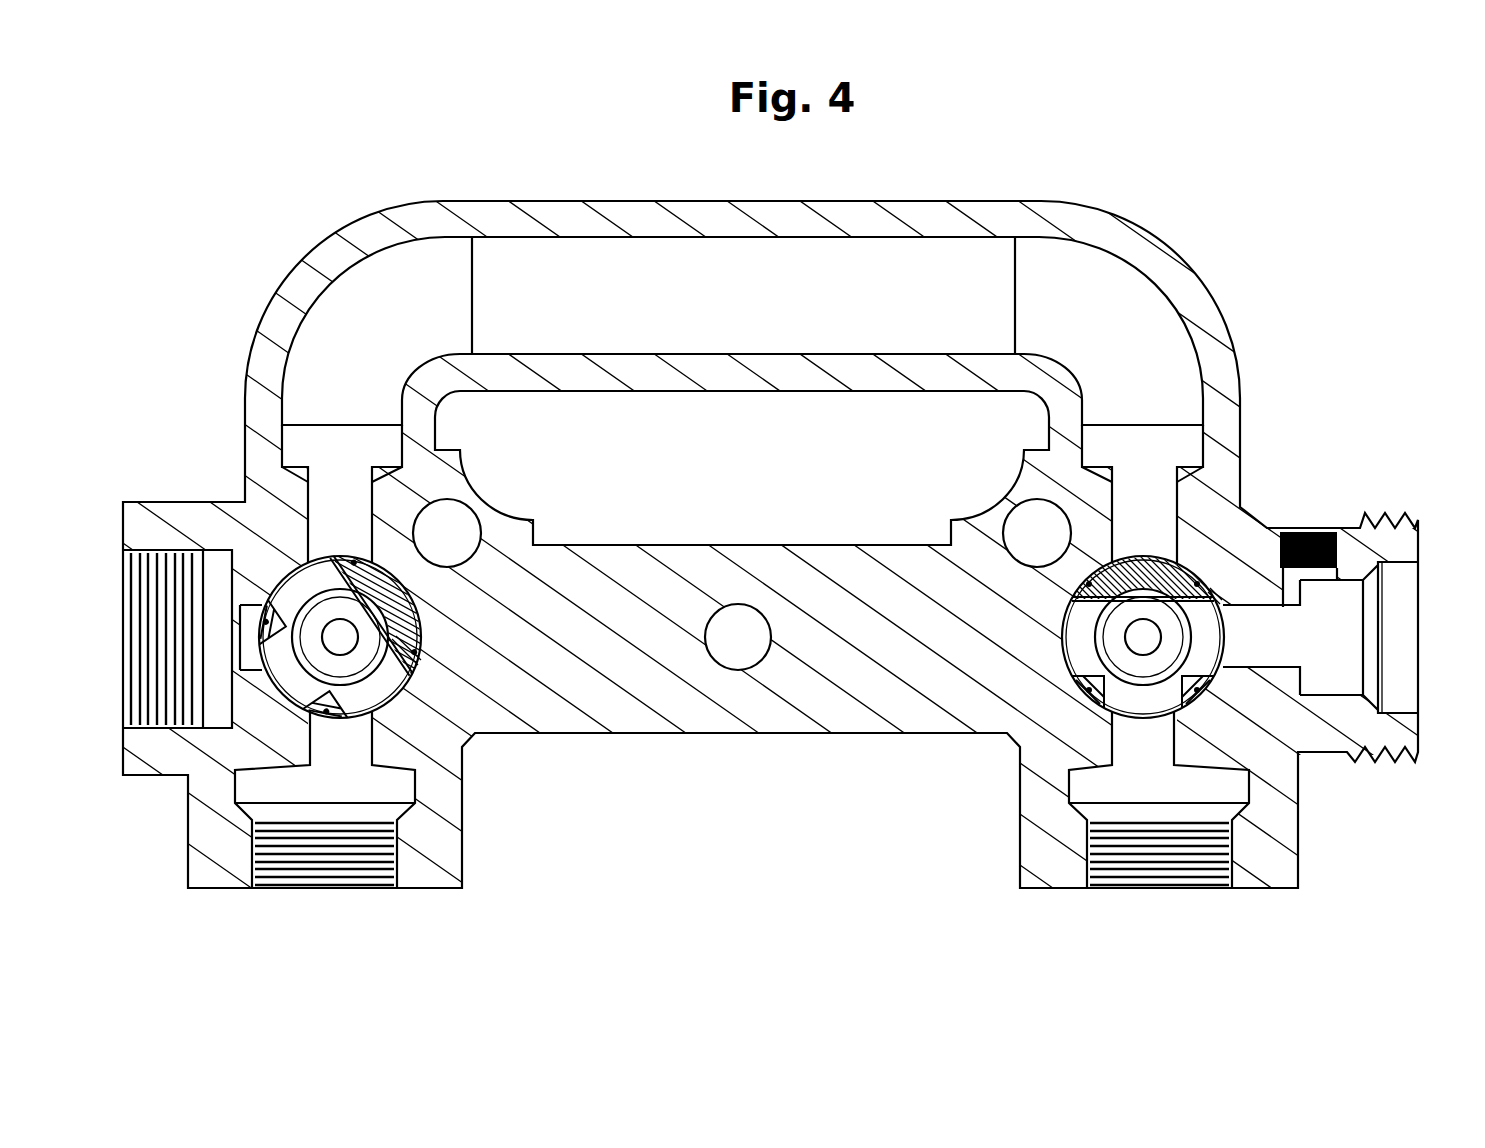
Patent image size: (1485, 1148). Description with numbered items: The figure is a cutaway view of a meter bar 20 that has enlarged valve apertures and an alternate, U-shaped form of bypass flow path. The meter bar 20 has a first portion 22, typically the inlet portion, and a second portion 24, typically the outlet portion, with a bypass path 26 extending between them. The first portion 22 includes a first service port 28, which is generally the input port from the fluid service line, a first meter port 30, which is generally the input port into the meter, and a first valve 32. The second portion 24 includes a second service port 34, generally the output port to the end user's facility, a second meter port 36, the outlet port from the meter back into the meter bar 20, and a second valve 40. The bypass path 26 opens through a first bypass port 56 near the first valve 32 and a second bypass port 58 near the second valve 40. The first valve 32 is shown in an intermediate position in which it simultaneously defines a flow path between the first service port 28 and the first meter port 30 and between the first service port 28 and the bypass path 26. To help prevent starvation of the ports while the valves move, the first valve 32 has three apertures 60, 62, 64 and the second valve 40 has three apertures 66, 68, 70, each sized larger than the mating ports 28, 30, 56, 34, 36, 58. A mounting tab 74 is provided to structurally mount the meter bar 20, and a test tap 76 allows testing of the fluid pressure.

The meter bar 20 is at (284, 252).
The first portion 22 is at (251, 350).
The second portion 24 is at (1264, 380).
The bypass path 26 is at (525, 280).
The first service port 28 is at (232, 555).
The first meter port 30 is at (332, 760).
The first valve 32 is at (445, 646).
The second service port 34 is at (1298, 632).
The second meter port 36 is at (1138, 770).
The second valve 40 is at (1300, 748).
The first bypass port 56 is at (288, 478).
The second bypass port 58 is at (1240, 470).
The aperture 60 is at (268, 592).
The aperture 62 is at (290, 690).
The aperture 64 is at (393, 693).
The aperture 66 is at (1218, 604).
The aperture 68 is at (1117, 703).
The aperture 70 is at (1060, 675).
The mounting tab 74 is at (738, 585).
The test tap 76 is at (1318, 530).